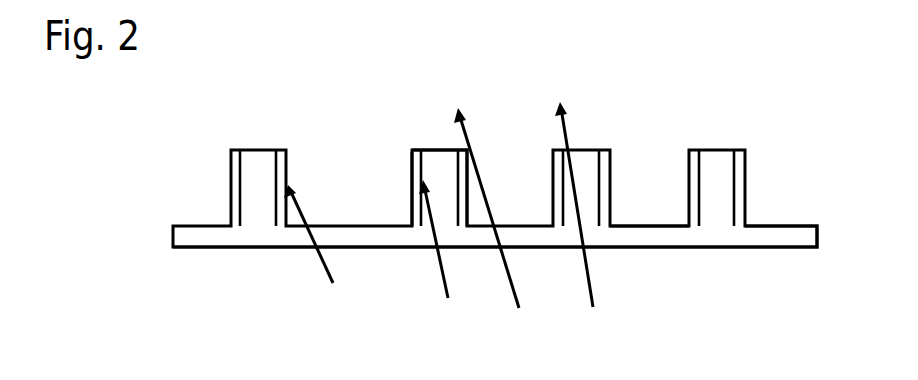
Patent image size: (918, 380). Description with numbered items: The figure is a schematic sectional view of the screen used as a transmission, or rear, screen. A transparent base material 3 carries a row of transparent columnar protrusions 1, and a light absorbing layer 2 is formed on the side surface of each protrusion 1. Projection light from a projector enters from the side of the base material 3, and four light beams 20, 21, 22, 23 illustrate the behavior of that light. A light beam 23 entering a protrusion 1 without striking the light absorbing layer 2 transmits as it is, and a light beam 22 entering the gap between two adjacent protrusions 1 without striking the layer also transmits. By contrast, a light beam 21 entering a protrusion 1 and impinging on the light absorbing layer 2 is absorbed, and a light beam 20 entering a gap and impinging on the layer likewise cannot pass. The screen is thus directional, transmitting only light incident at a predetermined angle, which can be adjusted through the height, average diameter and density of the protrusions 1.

The protrusion 1 is at (442, 150).
The light absorbing layer 2 is at (412, 153).
The base material 3 is at (640, 236).
The light beam 20 is at (318, 261).
The light beam 21 is at (433, 275).
The light beam 22 is at (513, 277).
The light beam 23 is at (590, 283).